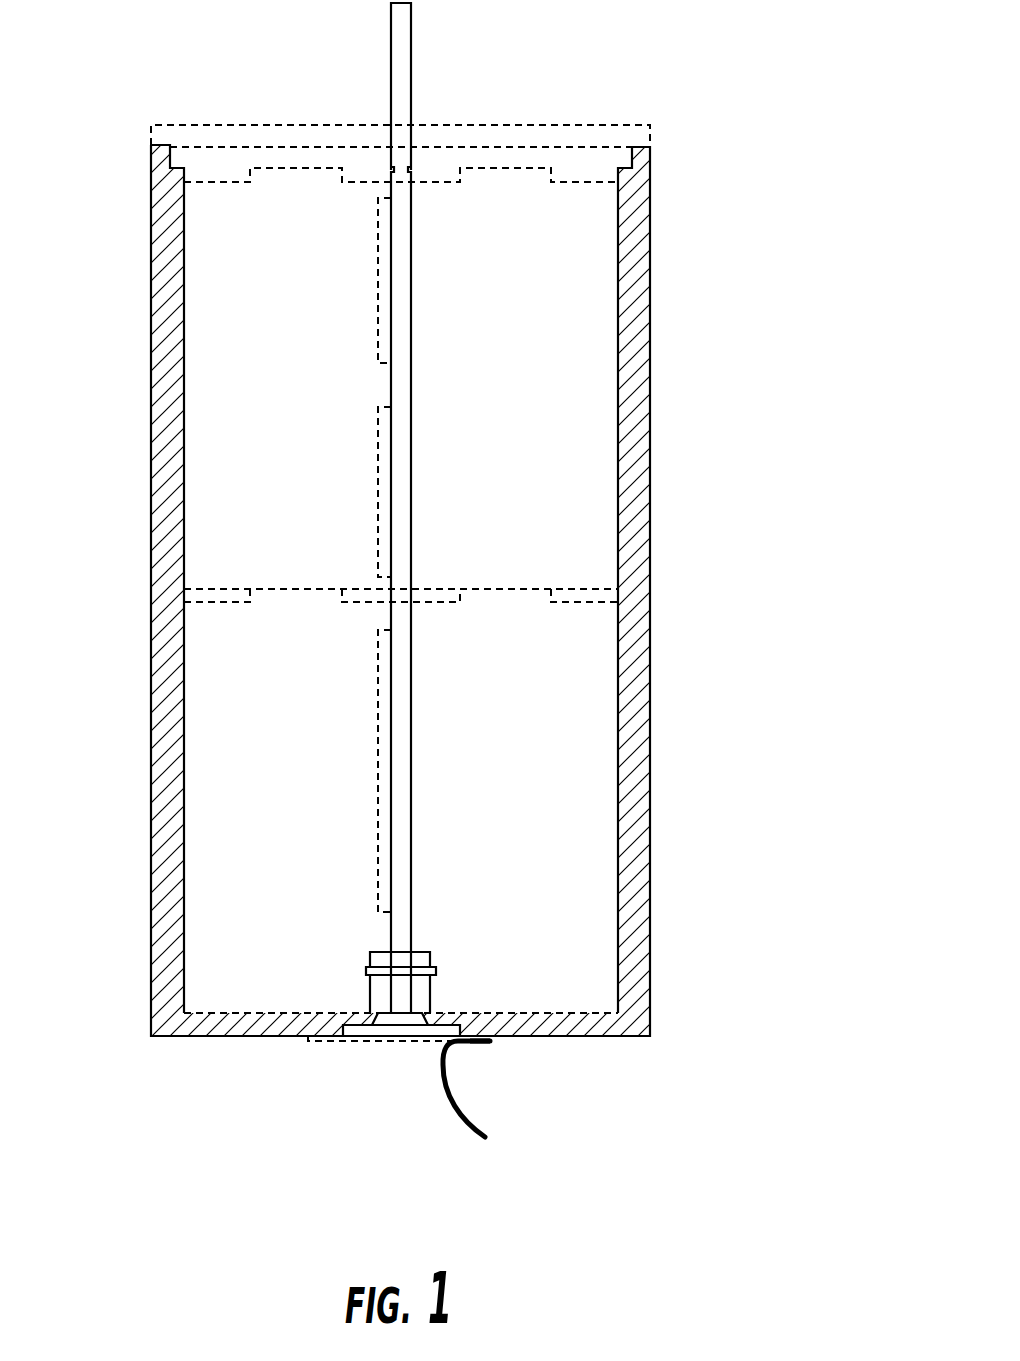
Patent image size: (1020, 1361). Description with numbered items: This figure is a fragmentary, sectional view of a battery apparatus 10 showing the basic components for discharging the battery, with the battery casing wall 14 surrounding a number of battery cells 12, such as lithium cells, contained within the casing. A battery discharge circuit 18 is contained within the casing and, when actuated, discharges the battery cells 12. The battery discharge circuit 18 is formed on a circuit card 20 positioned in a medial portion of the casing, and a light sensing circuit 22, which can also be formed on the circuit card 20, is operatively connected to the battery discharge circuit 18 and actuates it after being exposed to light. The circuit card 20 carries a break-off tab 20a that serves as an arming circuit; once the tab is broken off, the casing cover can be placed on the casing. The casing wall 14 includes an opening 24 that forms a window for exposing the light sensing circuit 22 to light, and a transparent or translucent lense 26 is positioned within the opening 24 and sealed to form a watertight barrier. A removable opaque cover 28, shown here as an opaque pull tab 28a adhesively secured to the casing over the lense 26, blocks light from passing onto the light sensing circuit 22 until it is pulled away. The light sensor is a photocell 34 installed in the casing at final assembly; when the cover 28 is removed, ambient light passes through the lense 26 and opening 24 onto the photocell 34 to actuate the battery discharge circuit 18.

The assembly 10 is at (715, 190).
The battery cells 12 is at (560, 562).
The container wall 14 is at (645, 345).
The battery discharge circuit 18 is at (378, 508).
The circuit card 20 is at (405, 273).
The break-off tab 20a is at (402, 65).
The light sensing circuit 22 is at (378, 287).
The opening 24 is at (350, 1020).
The lense 26 is at (383, 1041).
The opaque cover 28 is at (530, 1134).
The pull tab 28a is at (448, 1077).
The photocell 34 is at (372, 965).